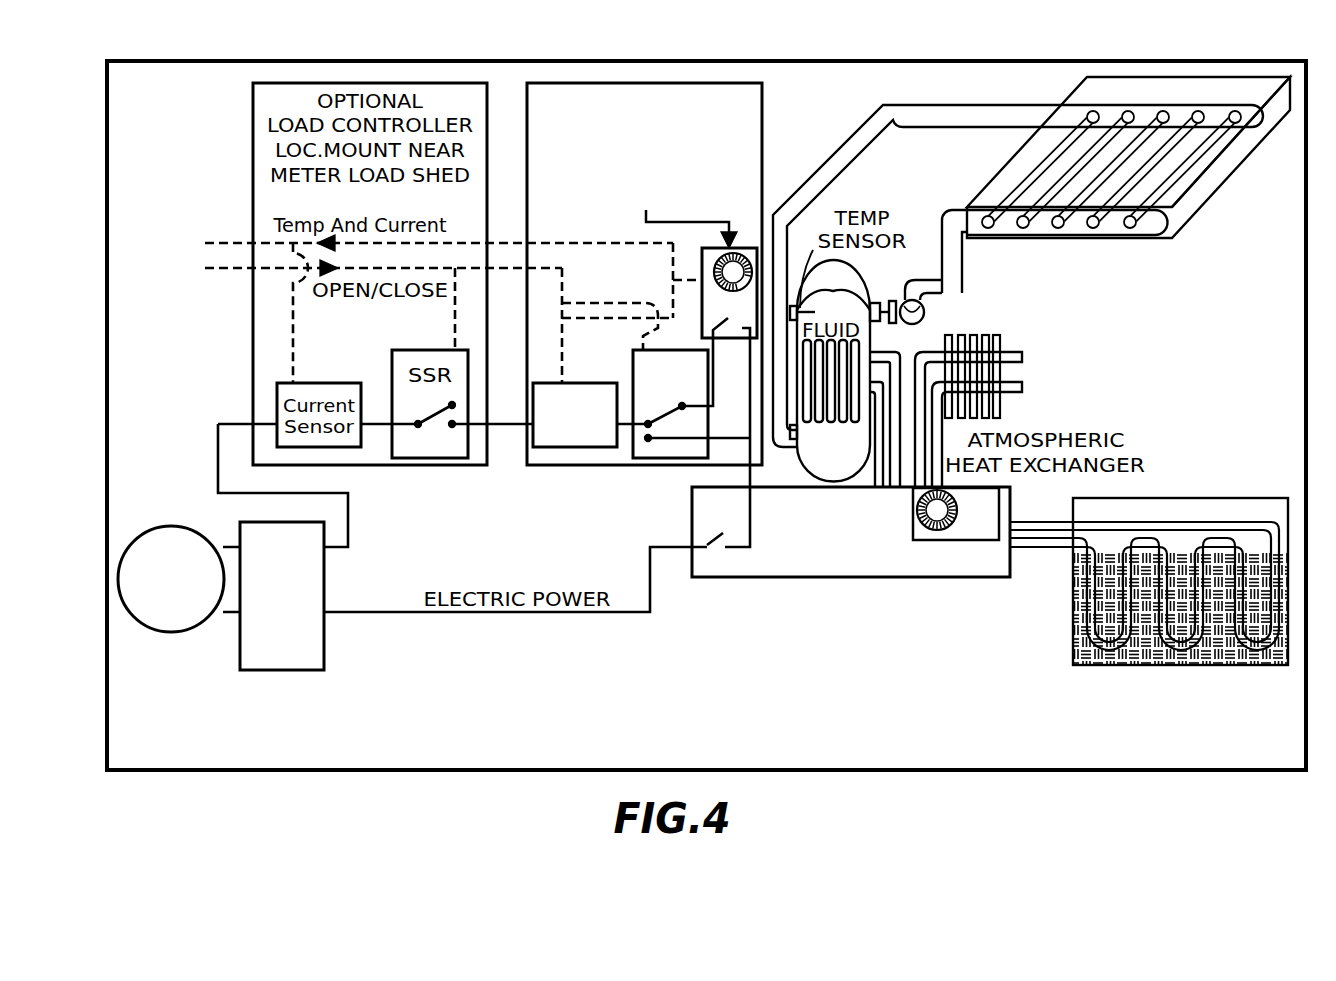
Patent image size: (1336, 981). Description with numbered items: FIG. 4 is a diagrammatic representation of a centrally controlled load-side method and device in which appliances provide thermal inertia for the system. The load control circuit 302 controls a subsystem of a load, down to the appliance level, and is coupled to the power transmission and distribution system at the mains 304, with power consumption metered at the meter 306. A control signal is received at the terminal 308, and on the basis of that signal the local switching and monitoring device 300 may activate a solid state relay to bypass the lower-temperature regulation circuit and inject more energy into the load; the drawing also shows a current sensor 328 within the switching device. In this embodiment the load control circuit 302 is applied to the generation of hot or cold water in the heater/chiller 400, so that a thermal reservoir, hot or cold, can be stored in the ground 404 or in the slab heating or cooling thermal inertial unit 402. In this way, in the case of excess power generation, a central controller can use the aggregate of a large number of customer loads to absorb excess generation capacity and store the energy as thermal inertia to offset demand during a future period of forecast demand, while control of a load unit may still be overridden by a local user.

The load control circuit 302 is at (203, 52).
The terminal 308 is at (190, 187).
The current sensor 328 is at (575, 383).
The local switching and monitoring device 300 is at (763, 172).
The slab heating or cooling thermal inertial unit 402 is at (1212, 193).
The ground 404 is at (1183, 498).
The heater/chiller 400 is at (851, 532).
The meter 306 is at (171, 579).
The mains 304 is at (282, 596).